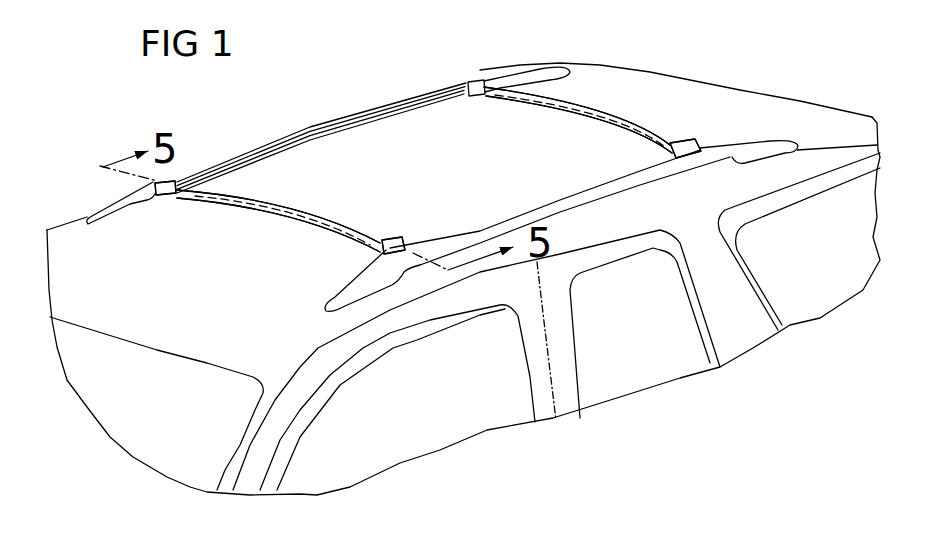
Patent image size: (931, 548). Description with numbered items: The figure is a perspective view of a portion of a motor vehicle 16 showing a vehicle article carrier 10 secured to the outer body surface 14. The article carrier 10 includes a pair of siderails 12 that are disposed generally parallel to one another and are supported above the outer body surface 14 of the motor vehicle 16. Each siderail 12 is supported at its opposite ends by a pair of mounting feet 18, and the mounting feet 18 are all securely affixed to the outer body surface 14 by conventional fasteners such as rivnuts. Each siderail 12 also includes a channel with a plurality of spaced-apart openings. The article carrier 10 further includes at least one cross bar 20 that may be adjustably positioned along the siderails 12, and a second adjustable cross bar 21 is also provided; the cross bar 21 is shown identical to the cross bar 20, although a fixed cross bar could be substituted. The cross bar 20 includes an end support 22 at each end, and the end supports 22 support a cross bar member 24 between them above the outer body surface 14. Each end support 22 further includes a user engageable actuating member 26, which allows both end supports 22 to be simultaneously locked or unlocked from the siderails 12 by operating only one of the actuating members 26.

The vehicle article carrier 10 is at (195, 118).
The siderail 12 is at (335, 125).
The outer body surface 14 is at (718, 93).
The motor vehicle 16 is at (83, 238).
The mounting feet 18 is at (540, 72).
The cross bar 20 is at (283, 207).
The second adjustable cross bar 21 is at (612, 116).
The end support 22 is at (167, 196).
The cross bar member 24 is at (572, 108).
The user engageable actuating member 26 is at (172, 182).